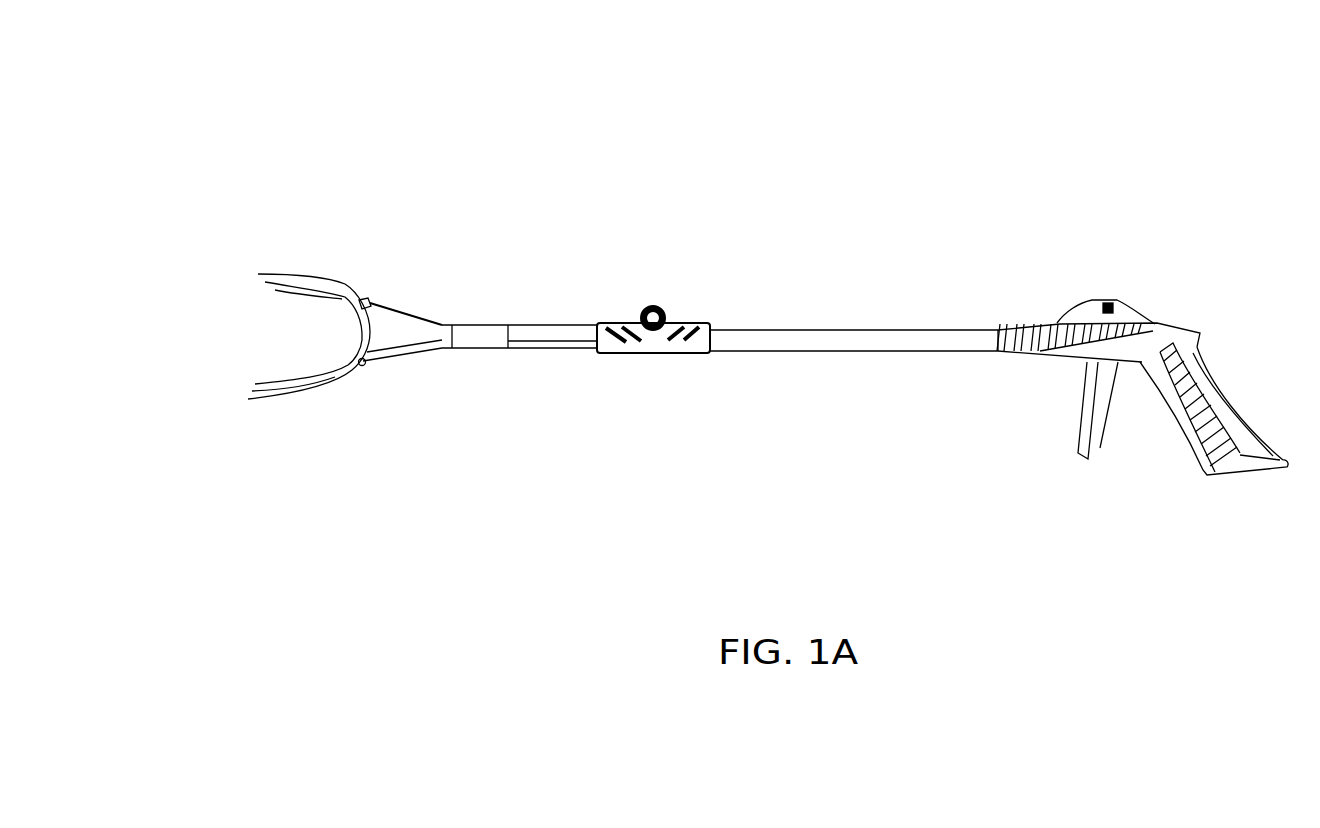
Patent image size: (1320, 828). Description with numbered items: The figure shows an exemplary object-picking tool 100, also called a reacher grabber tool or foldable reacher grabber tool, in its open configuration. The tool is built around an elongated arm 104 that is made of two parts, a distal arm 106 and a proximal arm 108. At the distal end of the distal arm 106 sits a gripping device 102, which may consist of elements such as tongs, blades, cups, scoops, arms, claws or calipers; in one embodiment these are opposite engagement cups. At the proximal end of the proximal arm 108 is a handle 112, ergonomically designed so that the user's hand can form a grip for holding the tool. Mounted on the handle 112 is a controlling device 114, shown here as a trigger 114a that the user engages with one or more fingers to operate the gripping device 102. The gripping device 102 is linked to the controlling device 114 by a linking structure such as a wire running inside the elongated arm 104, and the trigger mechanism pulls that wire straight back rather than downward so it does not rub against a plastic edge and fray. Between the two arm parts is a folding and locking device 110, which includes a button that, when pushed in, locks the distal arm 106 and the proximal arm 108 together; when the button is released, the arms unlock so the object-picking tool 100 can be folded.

The object-picking tool 100 is at (243, 146).
The gripping device 102 is at (313, 400).
The elongated arm 104 is at (515, 325).
The distal arm 106 is at (578, 352).
The proximal arm 108 is at (812, 328).
The folding and locking device 110 is at (615, 324).
The handle 112 is at (1138, 310).
The controlling device 114 is at (1070, 420).
The trigger 114a is at (1104, 393).